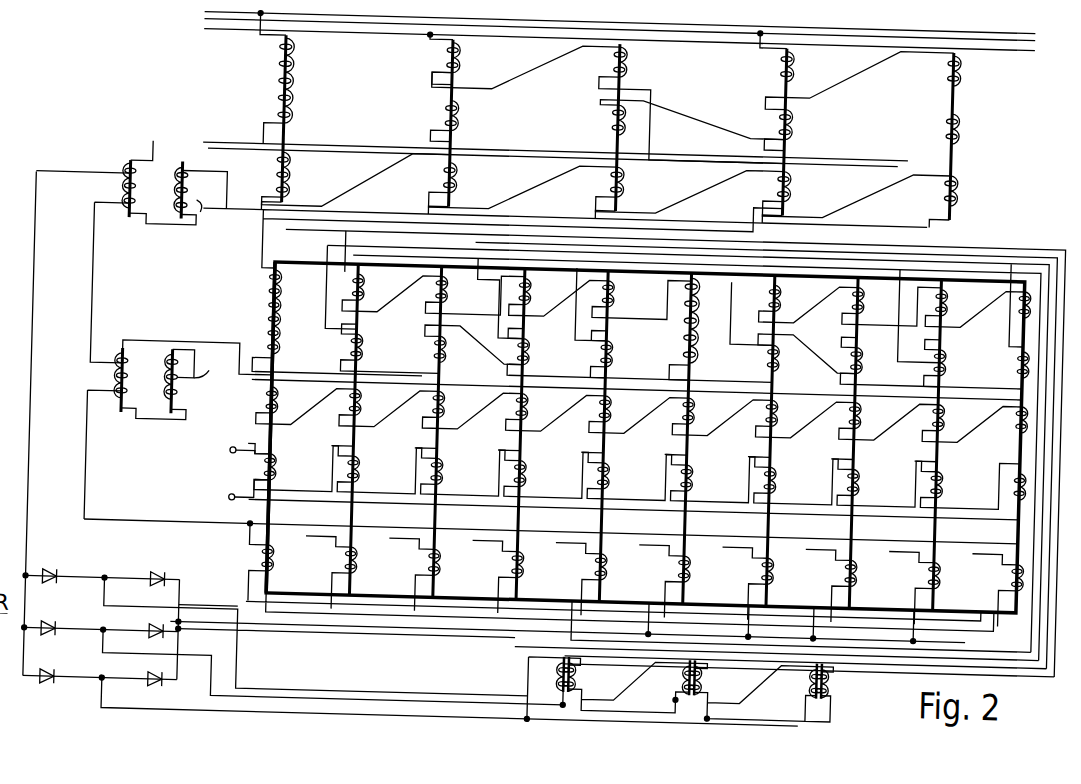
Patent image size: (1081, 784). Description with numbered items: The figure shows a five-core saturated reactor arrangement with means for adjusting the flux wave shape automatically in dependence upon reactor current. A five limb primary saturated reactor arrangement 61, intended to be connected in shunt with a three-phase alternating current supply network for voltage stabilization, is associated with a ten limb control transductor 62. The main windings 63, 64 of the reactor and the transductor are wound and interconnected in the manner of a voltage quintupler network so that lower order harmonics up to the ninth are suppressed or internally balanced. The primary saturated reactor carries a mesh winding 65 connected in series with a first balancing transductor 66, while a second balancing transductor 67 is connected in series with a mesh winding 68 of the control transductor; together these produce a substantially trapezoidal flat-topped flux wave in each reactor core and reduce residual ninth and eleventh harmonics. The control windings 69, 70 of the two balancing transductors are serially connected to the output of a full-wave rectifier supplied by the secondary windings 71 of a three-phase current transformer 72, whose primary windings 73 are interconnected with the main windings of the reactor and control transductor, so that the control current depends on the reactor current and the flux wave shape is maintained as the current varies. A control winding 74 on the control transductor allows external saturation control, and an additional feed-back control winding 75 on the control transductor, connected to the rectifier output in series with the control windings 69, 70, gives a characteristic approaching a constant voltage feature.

The five limb primary saturated reactor arrangement 61 is at (267, 118).
The ten limb control transductor 62 is at (252, 427).
The main windings of the reactor 63 is at (293, 92).
The main windings of the transductor 64 is at (289, 312).
The mesh winding 65 is at (356, 180).
The first balancing transductor 66 is at (175, 198).
The second balancing transductor 67 is at (193, 394).
The mesh winding of the control transductor 68 is at (258, 401).
The control winding of the first balancing transductor 69 is at (209, 218).
The control winding of the second balancing transductor 70 is at (218, 370).
The secondary windings 71 is at (678, 680).
The three-phase current transformer 72 is at (533, 689).
The primary windings 73 is at (707, 681).
The control winding 74 is at (253, 474).
The feed-back control winding 75 is at (255, 561).